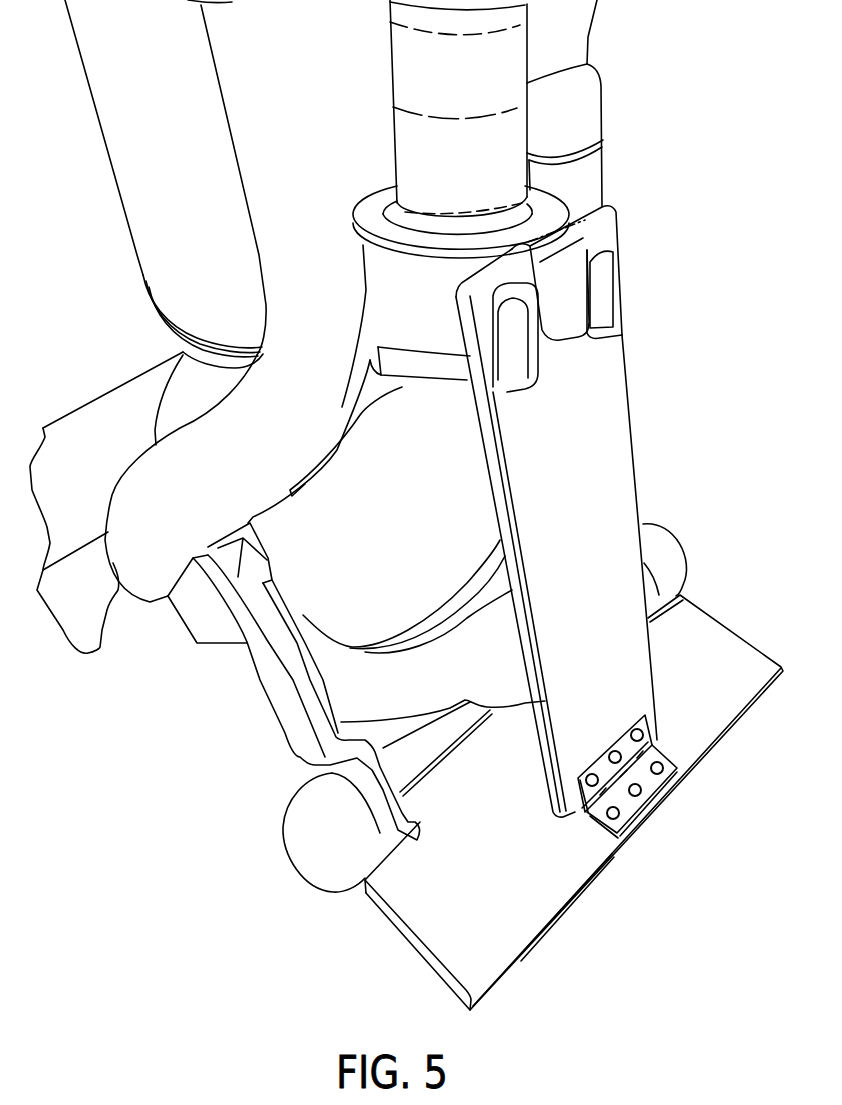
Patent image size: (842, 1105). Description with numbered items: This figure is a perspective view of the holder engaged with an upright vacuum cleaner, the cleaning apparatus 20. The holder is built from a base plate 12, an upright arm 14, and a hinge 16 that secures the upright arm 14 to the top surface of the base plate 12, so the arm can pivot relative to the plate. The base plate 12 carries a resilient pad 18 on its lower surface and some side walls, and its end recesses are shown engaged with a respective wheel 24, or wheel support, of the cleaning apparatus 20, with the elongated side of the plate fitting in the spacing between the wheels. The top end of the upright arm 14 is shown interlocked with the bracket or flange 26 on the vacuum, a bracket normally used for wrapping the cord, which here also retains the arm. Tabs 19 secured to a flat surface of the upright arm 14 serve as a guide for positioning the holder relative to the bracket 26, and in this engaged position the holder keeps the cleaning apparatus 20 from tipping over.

The base plate 12 is at (503, 870).
The upright arm 14 is at (634, 447).
The hinge 16 is at (647, 780).
The resilient pad 18 is at (567, 910).
The tabs 19 is at (527, 358).
The cleaning apparatus 20 is at (640, 92).
The wheel 24 is at (667, 542).
The bracket or flange 26 is at (590, 299).